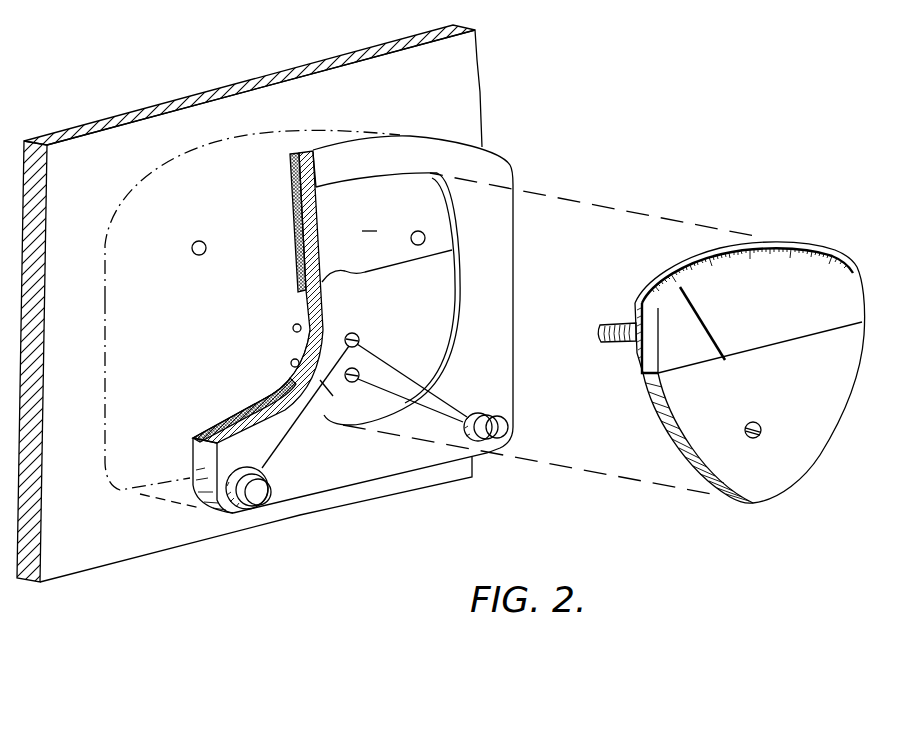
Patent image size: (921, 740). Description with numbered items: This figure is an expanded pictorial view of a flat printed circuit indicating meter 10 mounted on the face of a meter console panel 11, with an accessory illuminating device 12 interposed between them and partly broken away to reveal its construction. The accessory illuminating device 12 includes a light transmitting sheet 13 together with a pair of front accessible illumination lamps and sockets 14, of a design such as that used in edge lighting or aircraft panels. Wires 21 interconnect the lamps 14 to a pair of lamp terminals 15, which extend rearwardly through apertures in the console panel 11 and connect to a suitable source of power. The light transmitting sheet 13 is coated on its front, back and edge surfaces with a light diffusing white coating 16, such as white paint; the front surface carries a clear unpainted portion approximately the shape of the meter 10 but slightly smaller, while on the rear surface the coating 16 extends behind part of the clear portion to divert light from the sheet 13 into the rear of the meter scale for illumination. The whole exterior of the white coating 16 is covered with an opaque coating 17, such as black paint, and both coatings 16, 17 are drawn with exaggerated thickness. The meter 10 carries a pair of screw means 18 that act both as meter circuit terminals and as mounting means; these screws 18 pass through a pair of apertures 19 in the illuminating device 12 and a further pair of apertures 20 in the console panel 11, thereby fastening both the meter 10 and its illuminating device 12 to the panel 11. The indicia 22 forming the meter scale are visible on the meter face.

The printed circuit indicating meter 10 is at (769, 362).
The meter console panel 11 is at (472, 90).
The accessory illuminating device 12 is at (514, 172).
The light transmitting sheet 13 is at (313, 308).
The illumination lamps and sockets 14 is at (266, 490).
The lamp terminals 15 is at (360, 370).
The light diffusing white coating 16 is at (297, 214).
The opaque coating 17 is at (292, 188).
The screw means 18 is at (609, 343).
The apertures in the accessory illuminating device 19 is at (418, 247).
The apertures in the console panel 20 is at (198, 257).
The wires 21 is at (332, 394).
The indicia 22 is at (737, 252).